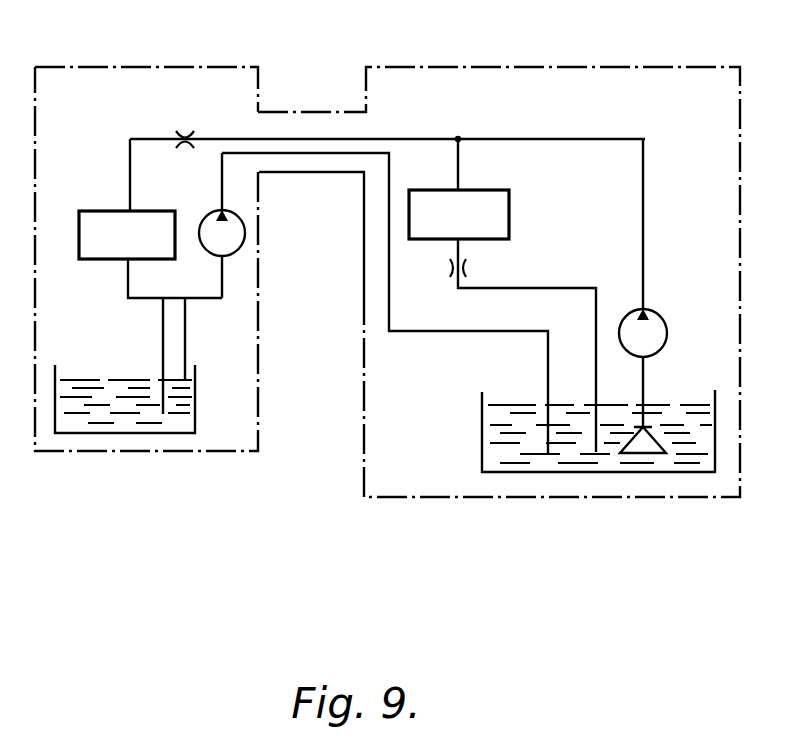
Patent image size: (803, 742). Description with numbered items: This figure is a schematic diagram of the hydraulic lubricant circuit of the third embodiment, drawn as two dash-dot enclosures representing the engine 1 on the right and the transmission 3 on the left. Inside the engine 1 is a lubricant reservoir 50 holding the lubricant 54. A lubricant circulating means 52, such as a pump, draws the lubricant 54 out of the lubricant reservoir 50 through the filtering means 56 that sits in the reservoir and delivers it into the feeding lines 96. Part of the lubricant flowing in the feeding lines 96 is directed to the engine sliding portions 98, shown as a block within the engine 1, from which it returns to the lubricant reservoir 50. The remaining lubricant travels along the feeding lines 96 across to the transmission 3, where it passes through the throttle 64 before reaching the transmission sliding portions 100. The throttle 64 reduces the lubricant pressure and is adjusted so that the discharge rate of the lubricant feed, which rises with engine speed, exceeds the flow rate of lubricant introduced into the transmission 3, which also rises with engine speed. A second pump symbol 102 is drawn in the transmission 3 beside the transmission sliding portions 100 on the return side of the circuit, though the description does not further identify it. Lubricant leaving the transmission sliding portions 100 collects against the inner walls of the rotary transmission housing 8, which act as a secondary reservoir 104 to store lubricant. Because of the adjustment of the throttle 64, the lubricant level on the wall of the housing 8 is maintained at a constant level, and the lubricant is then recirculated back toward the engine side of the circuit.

The engine 1 is at (504, 64).
The transmission 3 is at (118, 64).
The rotary transmission housing 8 is at (193, 392).
The lubricant reservoir 50 is at (482, 410).
The lubricant circulating means 52 is at (660, 316).
The lubricant 54 is at (490, 448).
The filtering means 56 is at (638, 462).
The throttle 64 is at (185, 132).
The feeding lines 96 is at (423, 137).
The engine sliding portions 98 is at (508, 192).
The transmission sliding portions 100 is at (90, 211).
The pump 102 is at (236, 231).
The secondary reservoir 104 is at (124, 436).